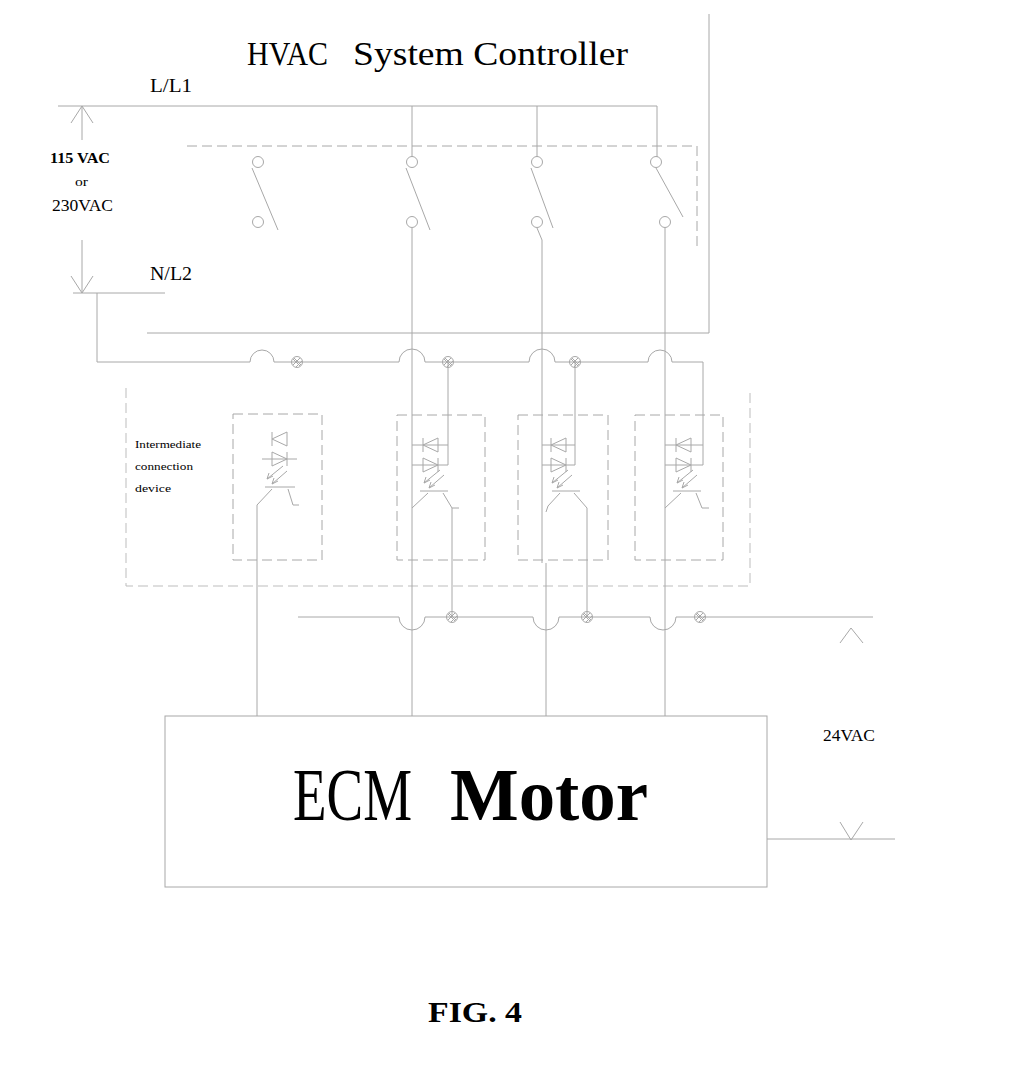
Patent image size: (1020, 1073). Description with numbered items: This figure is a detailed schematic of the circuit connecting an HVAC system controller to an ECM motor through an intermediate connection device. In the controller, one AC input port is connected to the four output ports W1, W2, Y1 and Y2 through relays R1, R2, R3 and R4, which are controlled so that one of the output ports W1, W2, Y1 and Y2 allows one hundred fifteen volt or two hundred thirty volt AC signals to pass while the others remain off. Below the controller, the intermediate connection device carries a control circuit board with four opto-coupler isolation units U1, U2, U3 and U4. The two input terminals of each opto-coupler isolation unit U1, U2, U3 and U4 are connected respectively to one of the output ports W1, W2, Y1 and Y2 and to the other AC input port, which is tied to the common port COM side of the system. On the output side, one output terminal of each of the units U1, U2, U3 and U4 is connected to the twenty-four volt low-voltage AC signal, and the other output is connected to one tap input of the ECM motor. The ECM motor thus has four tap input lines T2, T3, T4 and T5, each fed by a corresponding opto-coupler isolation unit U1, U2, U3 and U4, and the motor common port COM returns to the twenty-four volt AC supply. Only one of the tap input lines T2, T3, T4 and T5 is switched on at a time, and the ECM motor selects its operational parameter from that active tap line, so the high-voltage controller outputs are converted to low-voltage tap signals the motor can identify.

The relay R1 is at (246, 194).
The relay R2 is at (397, 194).
The relay R3 is at (520, 193).
The relay R4 is at (649, 192).
The output port W1 is at (294, 301).
The output port W2 is at (388, 472).
The output port Y1 is at (513, 395).
The output port Y2 is at (631, 472).
The opto-coupler isolation unit U1 is at (268, 565).
The opto-coupler isolation unit U2 is at (431, 516).
The opto-coupler isolation unit U3 is at (556, 565).
The opto-coupler isolation unit U4 is at (675, 487).
The tap input line T2 is at (221, 685).
The tap input line T3 is at (378, 685).
The tap input line T4 is at (505, 685).
The tap input line T5 is at (628, 685).
The common port COM is at (796, 844).